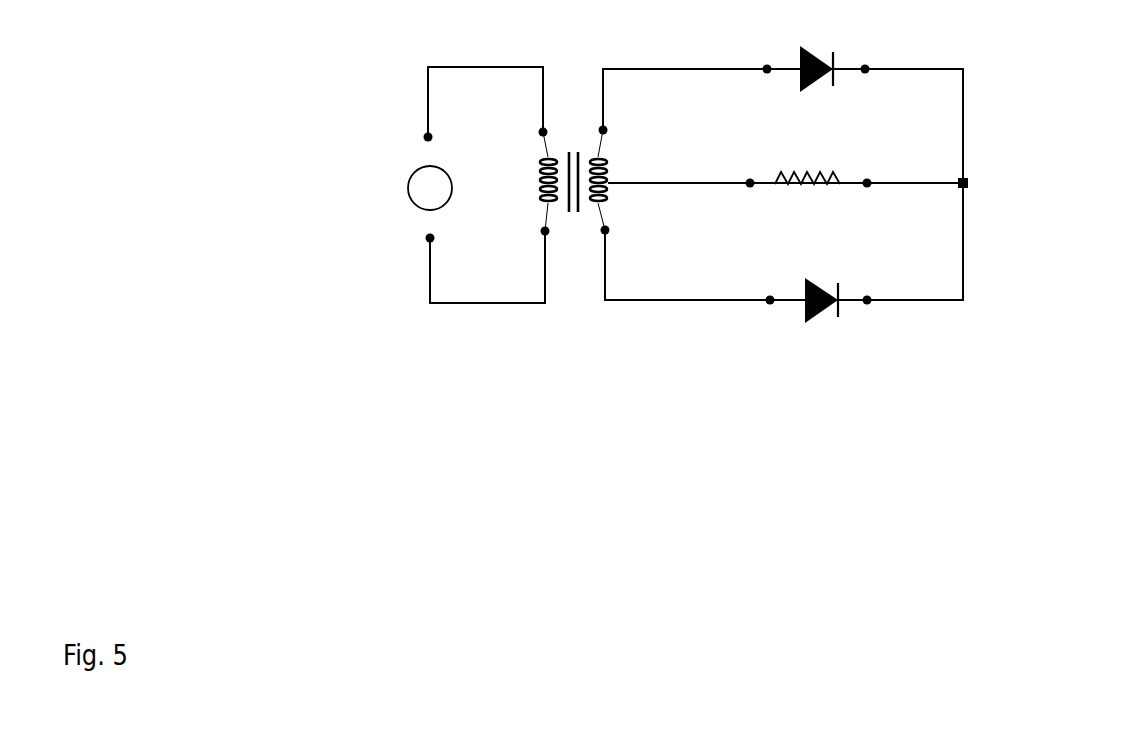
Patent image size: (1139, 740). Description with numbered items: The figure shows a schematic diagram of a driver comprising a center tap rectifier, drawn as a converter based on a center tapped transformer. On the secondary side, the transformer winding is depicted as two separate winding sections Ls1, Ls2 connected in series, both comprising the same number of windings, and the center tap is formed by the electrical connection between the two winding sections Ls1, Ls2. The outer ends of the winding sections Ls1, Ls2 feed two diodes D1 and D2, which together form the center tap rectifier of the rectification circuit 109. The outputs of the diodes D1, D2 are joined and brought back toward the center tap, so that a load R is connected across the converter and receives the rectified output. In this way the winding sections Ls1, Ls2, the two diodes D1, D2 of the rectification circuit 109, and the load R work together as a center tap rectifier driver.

The rectification circuit 109 is at (956, 236).
The diode D1 is at (816, 59).
The diode D2 is at (821, 313).
The load R is at (807, 192).
The winding section Ls1 is at (627, 158).
The winding section Ls2 is at (631, 221).